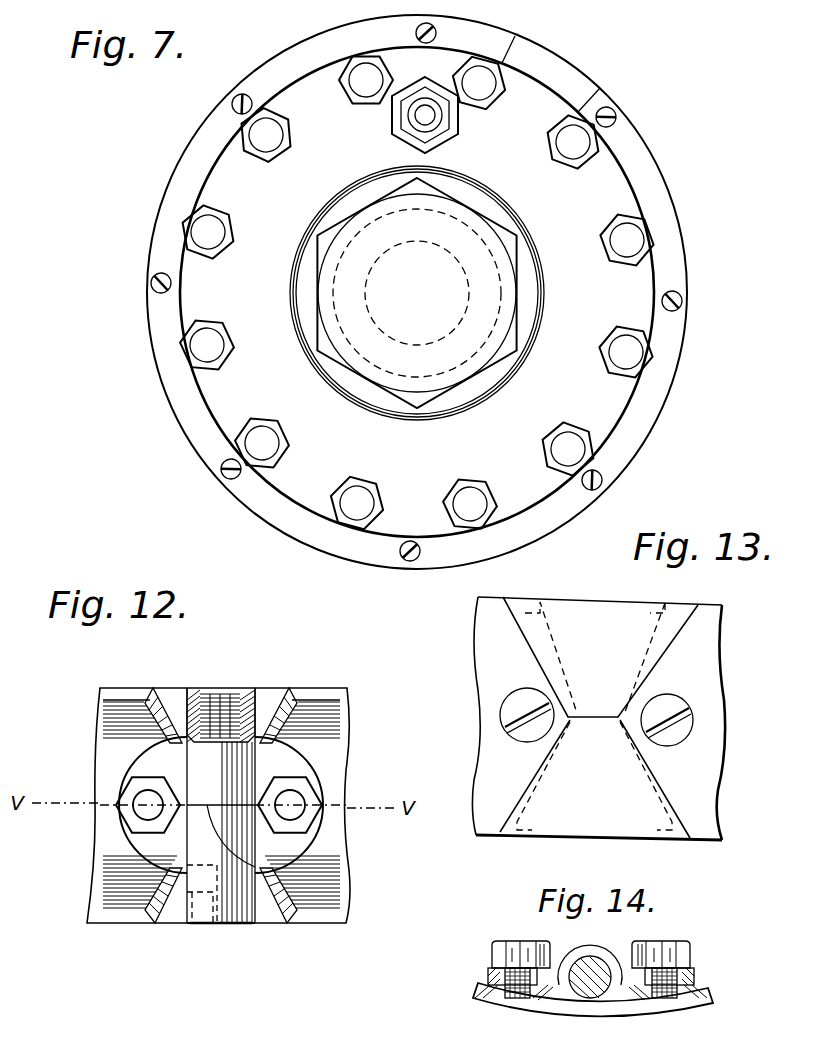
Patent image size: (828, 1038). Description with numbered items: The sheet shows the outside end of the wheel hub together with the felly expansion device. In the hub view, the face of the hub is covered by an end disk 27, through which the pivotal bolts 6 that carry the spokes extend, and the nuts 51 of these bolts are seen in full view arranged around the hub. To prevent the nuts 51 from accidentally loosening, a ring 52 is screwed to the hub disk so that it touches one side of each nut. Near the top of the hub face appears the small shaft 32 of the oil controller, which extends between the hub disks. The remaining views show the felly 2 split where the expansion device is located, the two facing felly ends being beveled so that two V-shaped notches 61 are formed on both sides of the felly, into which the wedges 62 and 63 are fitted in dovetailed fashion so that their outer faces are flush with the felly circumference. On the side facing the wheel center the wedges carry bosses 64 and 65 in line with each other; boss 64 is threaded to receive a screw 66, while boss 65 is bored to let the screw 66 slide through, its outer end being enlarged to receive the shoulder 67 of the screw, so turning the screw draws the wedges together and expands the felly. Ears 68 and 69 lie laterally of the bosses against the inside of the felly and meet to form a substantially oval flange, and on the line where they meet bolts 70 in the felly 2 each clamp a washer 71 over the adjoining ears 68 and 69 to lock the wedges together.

In FIG. 12, the felly 2 is at (345, 724).
In FIG. 13, the felly 2 is at (492, 670).
In FIG. 14, the felly 2 is at (482, 998).
In FIG. 7, the pivotal bolt 6 is at (625, 247).
In FIG. 7, the end plate or disk 27 is at (607, 287).
In FIG. 7, the small shaft 32 is at (432, 118).
In FIG. 7, the nut 51 is at (282, 440).
In FIG. 7, the ring 52 is at (662, 200).
In FIG. 13, the V-shaped notch 61 is at (530, 642).
In FIG. 12, the wedge 62 is at (275, 700).
In FIG. 12, the wedge 63 is at (266, 918).
In FIG. 12, the boss 64 is at (256, 700).
In FIG. 12, the boss 65 is at (172, 912).
In FIG. 12, the screw 66 is at (215, 735).
In FIG. 13, the screw 66 is at (600, 718).
In FIG. 14, the screw 66 is at (593, 975).
In FIG. 12, the shoulder 67 is at (198, 925).
In FIG. 12, the ear 68 is at (170, 762).
In FIG. 13, the ear 68 is at (590, 617).
In FIG. 14, the ear 68 is at (488, 977).
In FIG. 12, the ear 69 is at (118, 857).
In FIG. 12, the bolt 70 is at (125, 812).
In FIG. 13, the bolt 70 is at (512, 707).
In FIG. 14, the bolt 70 is at (512, 992).
In FIG. 12, the washer 71 is at (138, 773).
In FIG. 14, the washer 71 is at (495, 965).